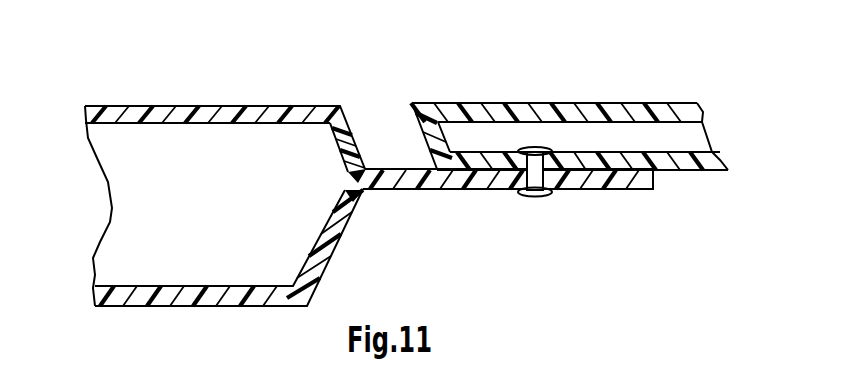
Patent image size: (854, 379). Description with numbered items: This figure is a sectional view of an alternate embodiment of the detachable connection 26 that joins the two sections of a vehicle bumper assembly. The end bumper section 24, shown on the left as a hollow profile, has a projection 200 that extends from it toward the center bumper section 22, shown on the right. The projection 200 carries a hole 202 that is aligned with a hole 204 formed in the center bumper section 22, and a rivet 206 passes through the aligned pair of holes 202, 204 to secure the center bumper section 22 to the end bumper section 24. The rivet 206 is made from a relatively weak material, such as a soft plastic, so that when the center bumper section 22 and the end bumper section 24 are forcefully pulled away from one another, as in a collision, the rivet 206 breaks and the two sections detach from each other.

The center bumper section 22 is at (608, 103).
The end bumper section 24 is at (241, 106).
The detachable connection 26 is at (437, 55).
The projection 200 is at (450, 190).
The hole 202 is at (548, 194).
The hole 204 is at (532, 149).
The rivet 206 is at (530, 197).